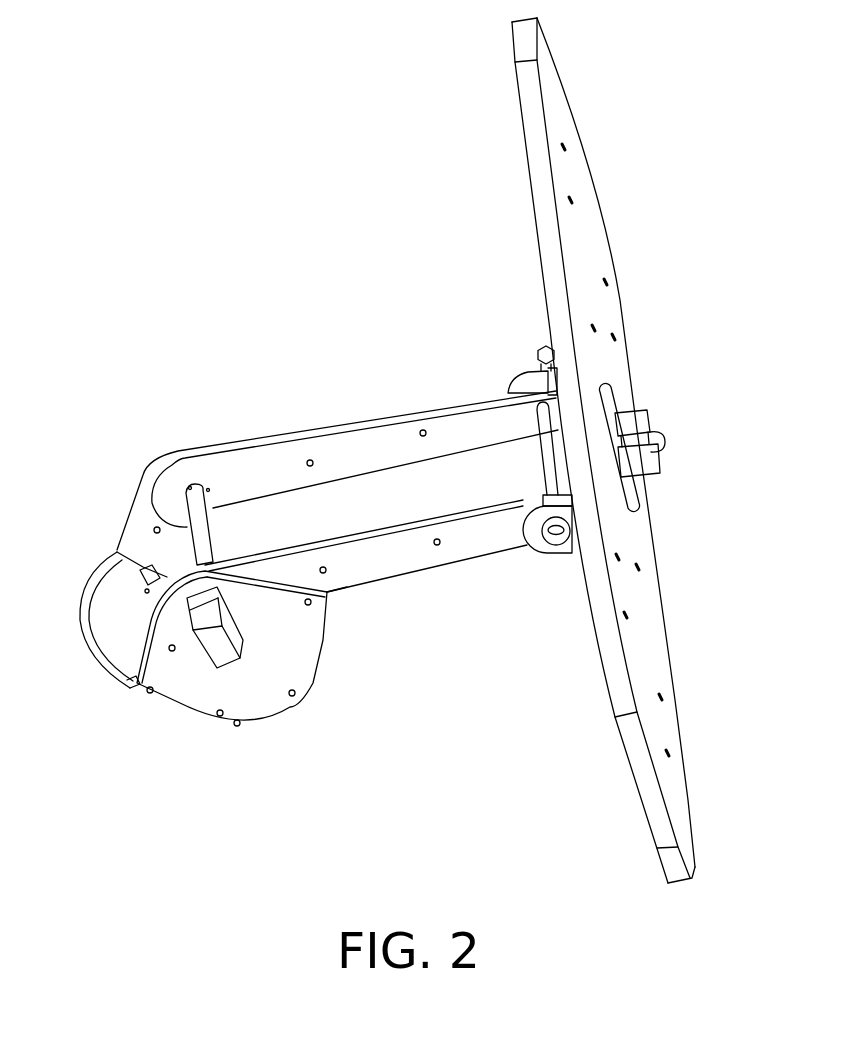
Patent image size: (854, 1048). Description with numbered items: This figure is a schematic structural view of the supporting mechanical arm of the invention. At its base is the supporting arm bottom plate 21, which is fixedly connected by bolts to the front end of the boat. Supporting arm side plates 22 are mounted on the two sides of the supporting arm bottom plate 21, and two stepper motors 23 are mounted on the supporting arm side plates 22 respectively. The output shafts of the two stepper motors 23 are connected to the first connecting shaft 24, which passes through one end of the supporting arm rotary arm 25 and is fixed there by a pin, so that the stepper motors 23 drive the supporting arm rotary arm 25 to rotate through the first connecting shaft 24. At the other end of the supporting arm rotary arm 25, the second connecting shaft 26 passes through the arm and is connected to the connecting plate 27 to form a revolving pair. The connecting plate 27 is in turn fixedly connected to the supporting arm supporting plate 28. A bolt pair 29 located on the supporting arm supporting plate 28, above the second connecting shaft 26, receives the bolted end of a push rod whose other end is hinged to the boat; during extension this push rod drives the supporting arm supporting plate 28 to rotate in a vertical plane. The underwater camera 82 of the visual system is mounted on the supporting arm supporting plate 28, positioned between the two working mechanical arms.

The supporting arm bottom plate 21 is at (113, 622).
The supporting arm side plates 22 is at (270, 688).
The stepper motors 23 is at (223, 653).
The first connecting shaft 24 is at (190, 492).
The supporting arm rotary arm 25 is at (343, 447).
The second connecting shaft 26 is at (545, 458).
The connecting plate 27 is at (540, 545).
The supporting arm supporting plate 28 is at (638, 542).
The bolt pair 29 is at (540, 348).
The underwater camera 82 is at (630, 430).